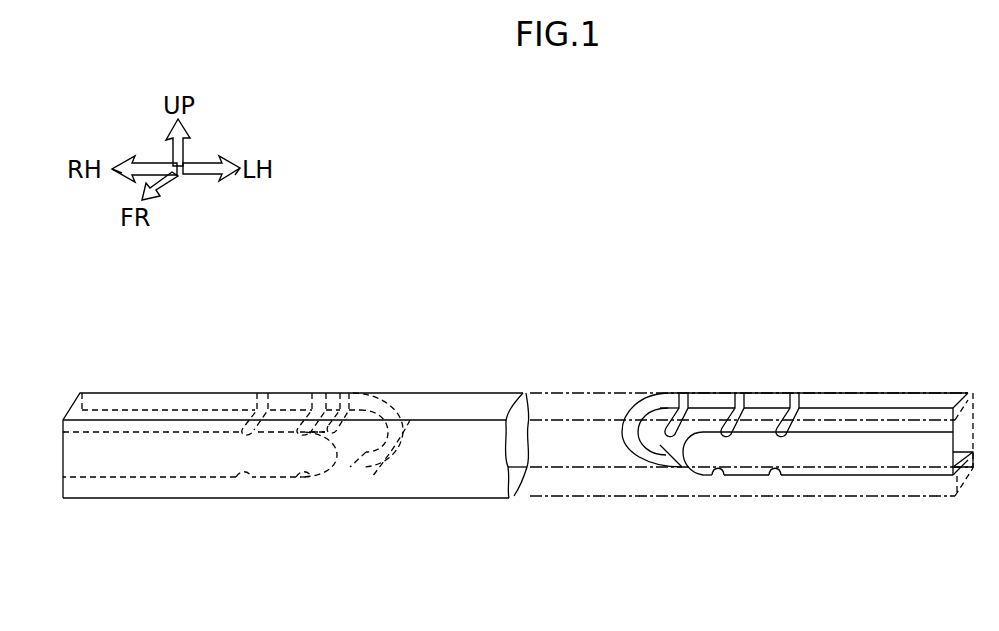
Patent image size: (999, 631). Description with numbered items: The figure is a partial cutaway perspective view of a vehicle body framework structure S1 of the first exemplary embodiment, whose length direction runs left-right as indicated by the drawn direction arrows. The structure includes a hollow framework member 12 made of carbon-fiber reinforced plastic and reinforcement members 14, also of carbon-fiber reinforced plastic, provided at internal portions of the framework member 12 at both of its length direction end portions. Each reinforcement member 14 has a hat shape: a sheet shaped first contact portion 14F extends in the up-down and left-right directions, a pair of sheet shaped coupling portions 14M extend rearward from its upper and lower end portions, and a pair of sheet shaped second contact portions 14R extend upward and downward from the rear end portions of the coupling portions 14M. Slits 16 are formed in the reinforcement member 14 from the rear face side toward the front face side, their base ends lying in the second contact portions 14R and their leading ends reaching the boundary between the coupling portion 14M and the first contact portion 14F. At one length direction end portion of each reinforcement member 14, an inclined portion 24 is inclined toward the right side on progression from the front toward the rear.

The vehicle body framework structure S1 is at (568, 238).
The framework member 12 is at (443, 390).
The reinforcement member 14 is at (199, 480).
The first contact portion 14F is at (97, 470).
The coupling portion 14M is at (228, 393).
The second contact portion 14R is at (170, 393).
The slit 16 is at (680, 392).
The inclined portion 24 is at (385, 470).